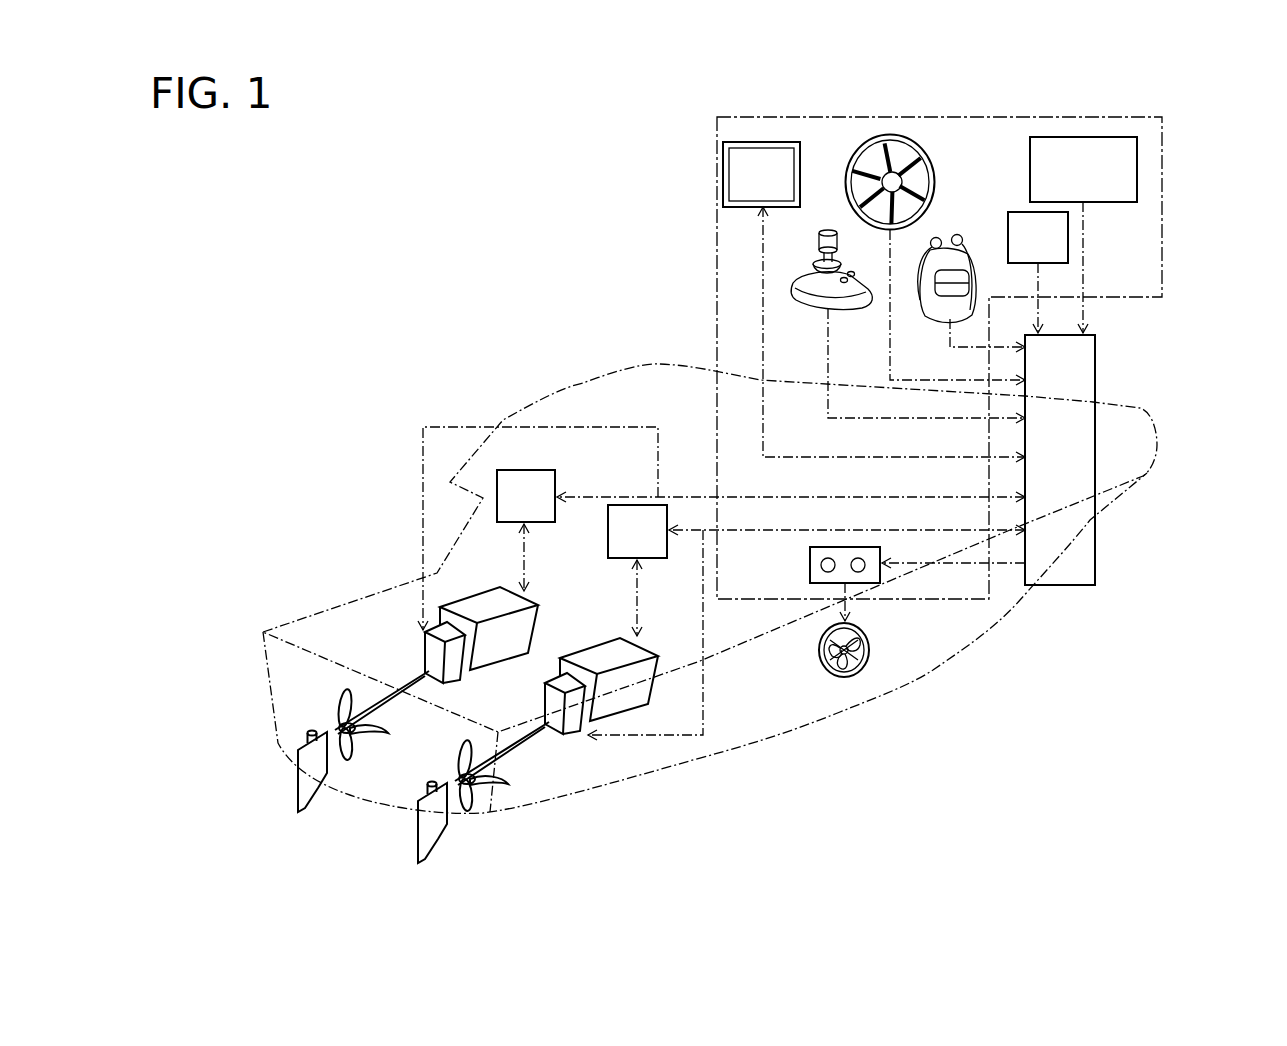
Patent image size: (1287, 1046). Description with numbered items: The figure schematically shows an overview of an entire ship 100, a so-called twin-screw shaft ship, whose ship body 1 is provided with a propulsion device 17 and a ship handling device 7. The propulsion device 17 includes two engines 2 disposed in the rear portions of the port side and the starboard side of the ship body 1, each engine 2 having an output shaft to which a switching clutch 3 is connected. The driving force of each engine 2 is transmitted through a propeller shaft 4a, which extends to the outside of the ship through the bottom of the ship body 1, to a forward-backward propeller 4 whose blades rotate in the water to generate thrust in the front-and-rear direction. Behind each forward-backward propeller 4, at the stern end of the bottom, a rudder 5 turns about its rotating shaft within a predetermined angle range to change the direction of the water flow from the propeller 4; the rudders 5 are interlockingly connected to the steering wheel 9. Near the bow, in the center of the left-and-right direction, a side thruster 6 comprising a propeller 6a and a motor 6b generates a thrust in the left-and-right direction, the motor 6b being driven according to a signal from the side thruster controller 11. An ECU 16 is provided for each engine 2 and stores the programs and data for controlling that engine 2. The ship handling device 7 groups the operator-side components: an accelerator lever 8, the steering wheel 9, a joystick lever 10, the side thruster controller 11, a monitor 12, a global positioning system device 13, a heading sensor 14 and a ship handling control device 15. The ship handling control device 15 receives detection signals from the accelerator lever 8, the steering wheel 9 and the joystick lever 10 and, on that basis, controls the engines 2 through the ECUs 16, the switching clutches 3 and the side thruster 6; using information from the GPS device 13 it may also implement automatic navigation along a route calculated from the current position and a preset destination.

The ship 100 is at (1229, 96).
The ship body 1 is at (548, 400).
The engine 2 is at (490, 598).
The switching clutch 3 is at (462, 683).
The forward-backward propeller 4 is at (340, 693).
The propeller shaft 4a is at (410, 681).
The rudder 5 is at (297, 773).
The side thruster 6 is at (868, 653).
The propeller 6a is at (863, 645).
The motor 6b is at (838, 670).
The ship handling device 7 is at (860, 116).
The accelerator lever 8 is at (958, 238).
The steering wheel 9 is at (929, 165).
The joystick lever 10 is at (828, 230).
The side thruster controller 11 is at (810, 564).
The monitor 12 is at (799, 166).
The global positioning system (GPS) device 13 is at (1015, 212).
The heading sensor 14 is at (1116, 203).
The ship handling control device 15 is at (1075, 472).
The ECU 16 is at (541, 523).
The propulsion device 17 is at (549, 814).